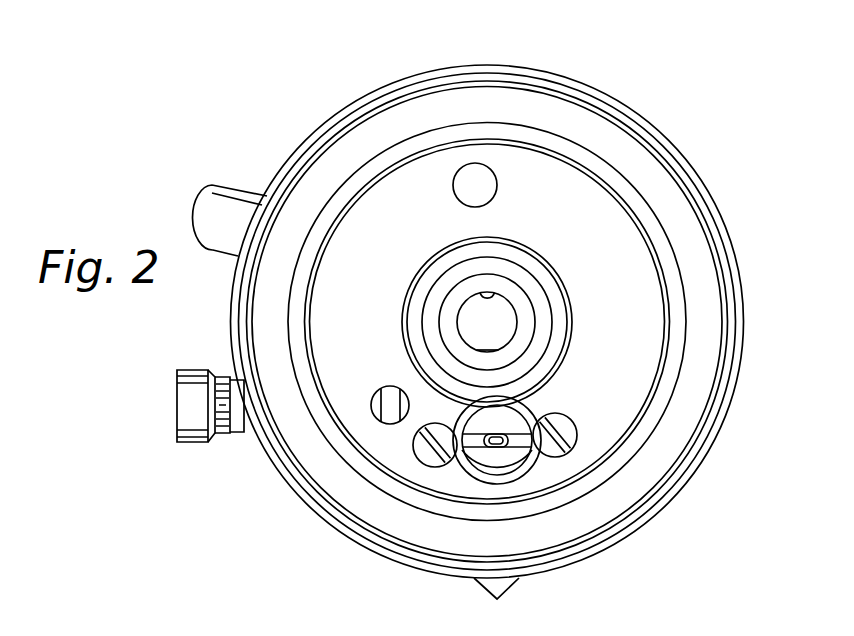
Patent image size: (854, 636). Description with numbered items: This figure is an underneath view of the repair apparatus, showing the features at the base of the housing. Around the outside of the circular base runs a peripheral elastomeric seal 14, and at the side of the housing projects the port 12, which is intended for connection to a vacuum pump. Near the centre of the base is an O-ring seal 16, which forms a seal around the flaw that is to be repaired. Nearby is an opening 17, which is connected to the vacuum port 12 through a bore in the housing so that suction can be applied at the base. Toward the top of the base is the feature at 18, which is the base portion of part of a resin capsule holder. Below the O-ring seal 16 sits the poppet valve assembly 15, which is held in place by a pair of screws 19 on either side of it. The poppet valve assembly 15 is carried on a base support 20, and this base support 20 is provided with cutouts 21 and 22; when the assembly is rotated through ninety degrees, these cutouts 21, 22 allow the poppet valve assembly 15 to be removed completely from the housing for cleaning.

The port 12 is at (203, 335).
The peripheral elastomeric seal 14 is at (725, 253).
The poppet valve assembly 15 is at (507, 420).
The O-ring seal 16 is at (523, 282).
The opening 17 is at (385, 386).
The base portion of resin capsule holder 18 is at (487, 182).
The screws 19 is at (570, 433).
The base support 20 is at (513, 463).
The cutout 21 is at (492, 480).
The cutout 22 is at (491, 396).